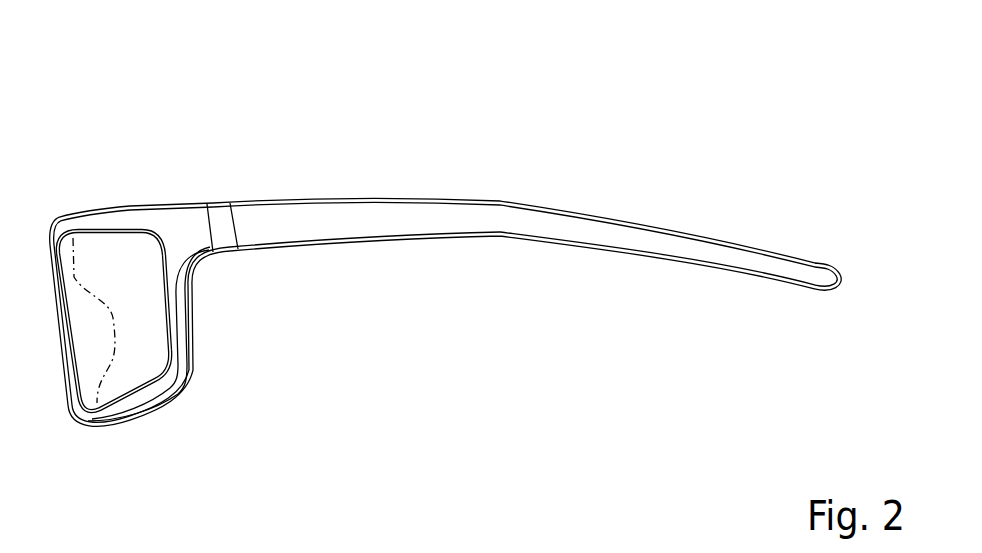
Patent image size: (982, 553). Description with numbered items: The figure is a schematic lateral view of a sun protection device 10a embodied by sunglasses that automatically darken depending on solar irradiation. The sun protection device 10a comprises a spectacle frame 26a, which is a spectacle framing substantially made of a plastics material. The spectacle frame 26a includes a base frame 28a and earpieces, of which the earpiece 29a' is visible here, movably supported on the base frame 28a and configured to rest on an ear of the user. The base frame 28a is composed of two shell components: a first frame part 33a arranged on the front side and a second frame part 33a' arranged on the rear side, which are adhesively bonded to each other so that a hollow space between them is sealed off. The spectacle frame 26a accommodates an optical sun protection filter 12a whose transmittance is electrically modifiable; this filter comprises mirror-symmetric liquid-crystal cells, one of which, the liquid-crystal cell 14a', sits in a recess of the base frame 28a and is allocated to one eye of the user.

The sun protection device 10a is at (446, 265).
The optical sun protection filter 12a is at (200, 389).
The liquid-crystal cell 14a' is at (125, 370).
The spectacle frame 26a is at (213, 195).
The base frame 28a is at (93, 420).
The earpiece 29a' is at (526, 181).
The first frame part 33a is at (111, 166).
The second frame part 33a' is at (214, 334).